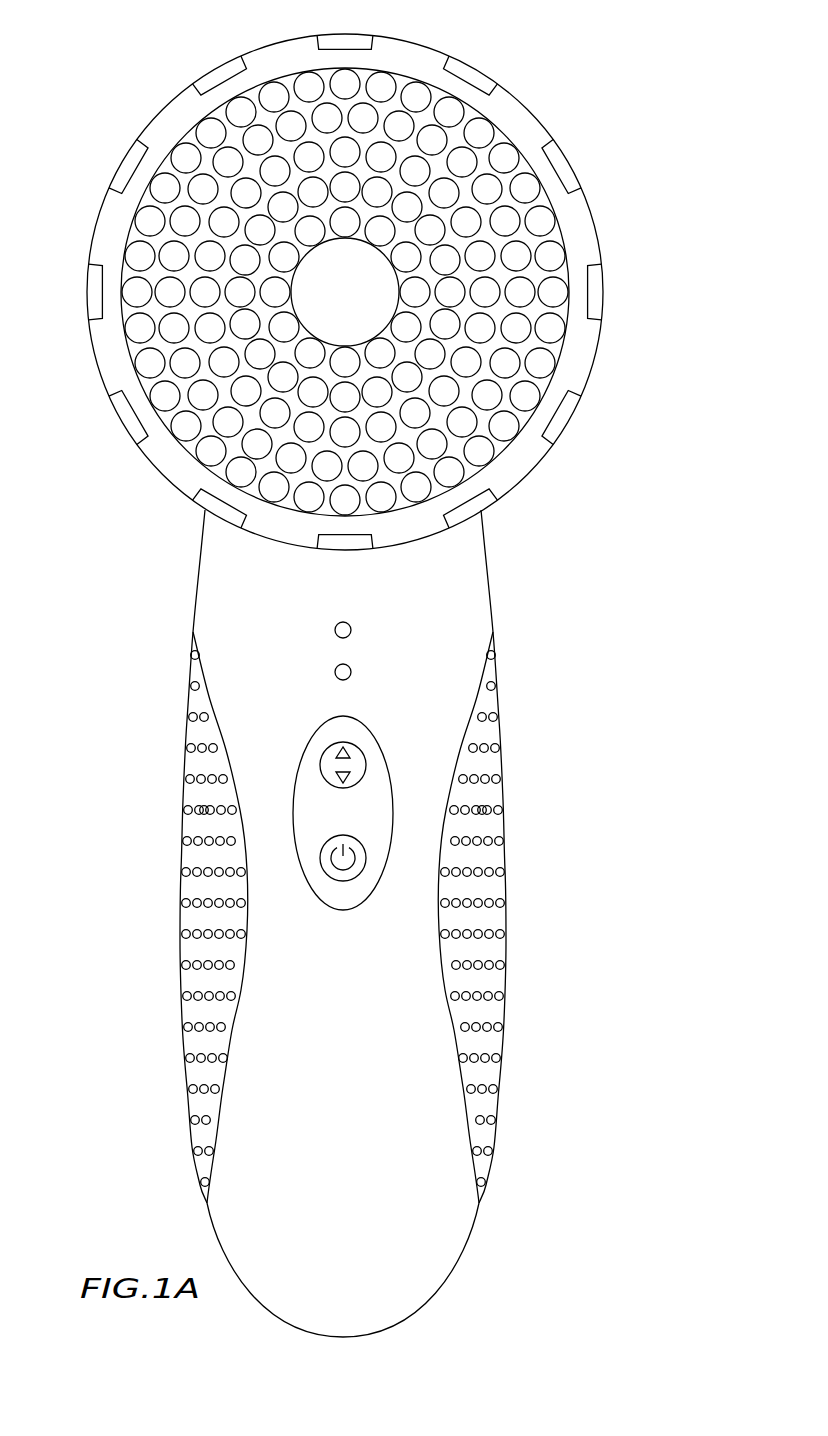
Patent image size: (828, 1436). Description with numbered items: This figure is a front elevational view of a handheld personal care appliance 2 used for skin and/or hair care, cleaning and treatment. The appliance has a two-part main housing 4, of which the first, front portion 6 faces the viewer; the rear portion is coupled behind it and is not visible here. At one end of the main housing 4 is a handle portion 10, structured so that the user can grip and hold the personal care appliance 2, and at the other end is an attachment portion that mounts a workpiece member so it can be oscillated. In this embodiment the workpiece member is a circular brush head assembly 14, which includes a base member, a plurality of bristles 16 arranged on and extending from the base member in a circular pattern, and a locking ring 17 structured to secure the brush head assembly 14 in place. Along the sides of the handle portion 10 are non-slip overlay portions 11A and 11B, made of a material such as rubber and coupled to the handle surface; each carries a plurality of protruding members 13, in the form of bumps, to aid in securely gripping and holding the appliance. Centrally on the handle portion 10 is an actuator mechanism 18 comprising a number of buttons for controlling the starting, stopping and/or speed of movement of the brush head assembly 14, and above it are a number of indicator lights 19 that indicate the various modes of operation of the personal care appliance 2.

The personal care appliance 2 is at (371, 674).
The main housing 4 is at (365, 923).
The first (front) portion 6 is at (445, 1212).
The handle portion 10 is at (437, 1292).
The non-slip overlay portion 11A is at (343, 917).
The non-slip overlay portion 11B is at (497, 860).
The protruding members 13 is at (207, 787).
The brush head assembly 14 is at (600, 218).
The bristles 16 is at (412, 172).
The locking ring 17 is at (111, 229).
The actuator mechanism 18 is at (366, 772).
The indicator lights 19 is at (352, 627).